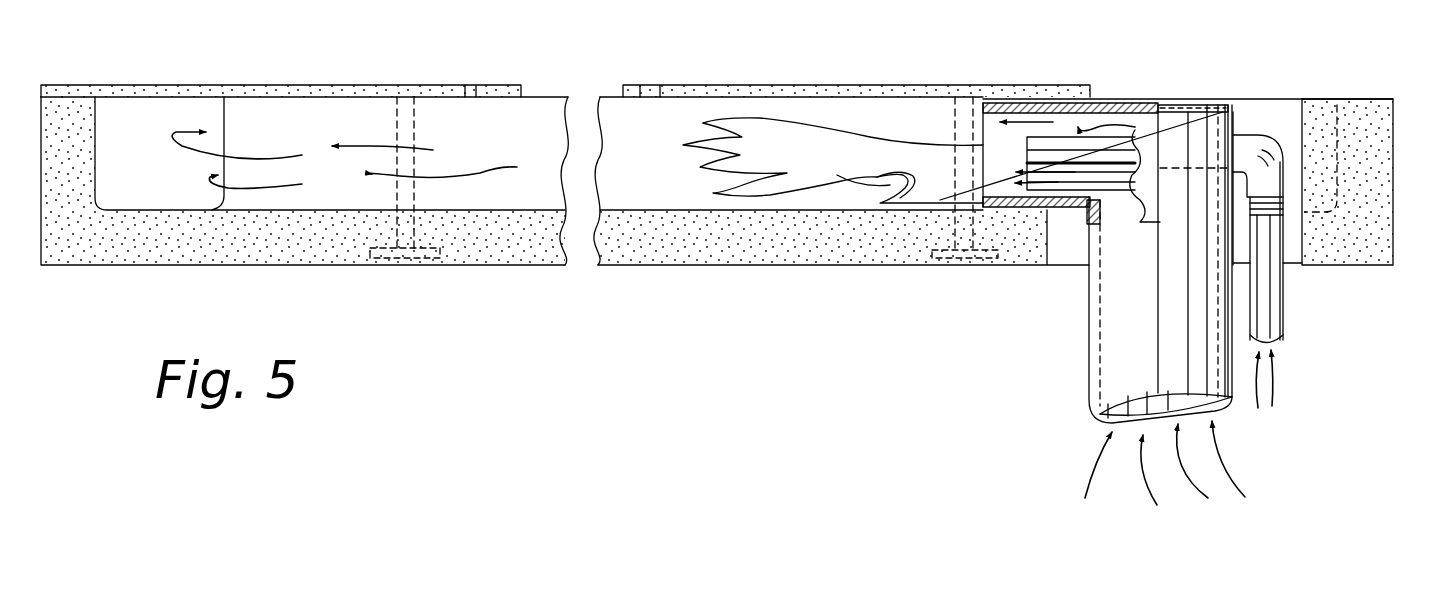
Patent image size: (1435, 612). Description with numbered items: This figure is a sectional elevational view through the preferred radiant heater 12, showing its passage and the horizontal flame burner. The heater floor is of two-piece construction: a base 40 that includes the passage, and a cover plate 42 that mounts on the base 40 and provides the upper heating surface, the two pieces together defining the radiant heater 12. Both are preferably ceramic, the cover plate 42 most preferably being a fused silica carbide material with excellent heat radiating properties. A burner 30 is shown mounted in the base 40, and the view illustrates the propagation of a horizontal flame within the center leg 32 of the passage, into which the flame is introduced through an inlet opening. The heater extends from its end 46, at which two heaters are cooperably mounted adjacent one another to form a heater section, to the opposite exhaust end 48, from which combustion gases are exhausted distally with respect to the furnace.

The radiant heater 12 is at (978, 68).
The burner 30 is at (1195, 102).
The center leg 32 is at (793, 112).
The base 40 is at (152, 248).
The cover plate 42 is at (342, 83).
The ends 46 is at (62, 85).
The exhaust ends 48 is at (1360, 100).